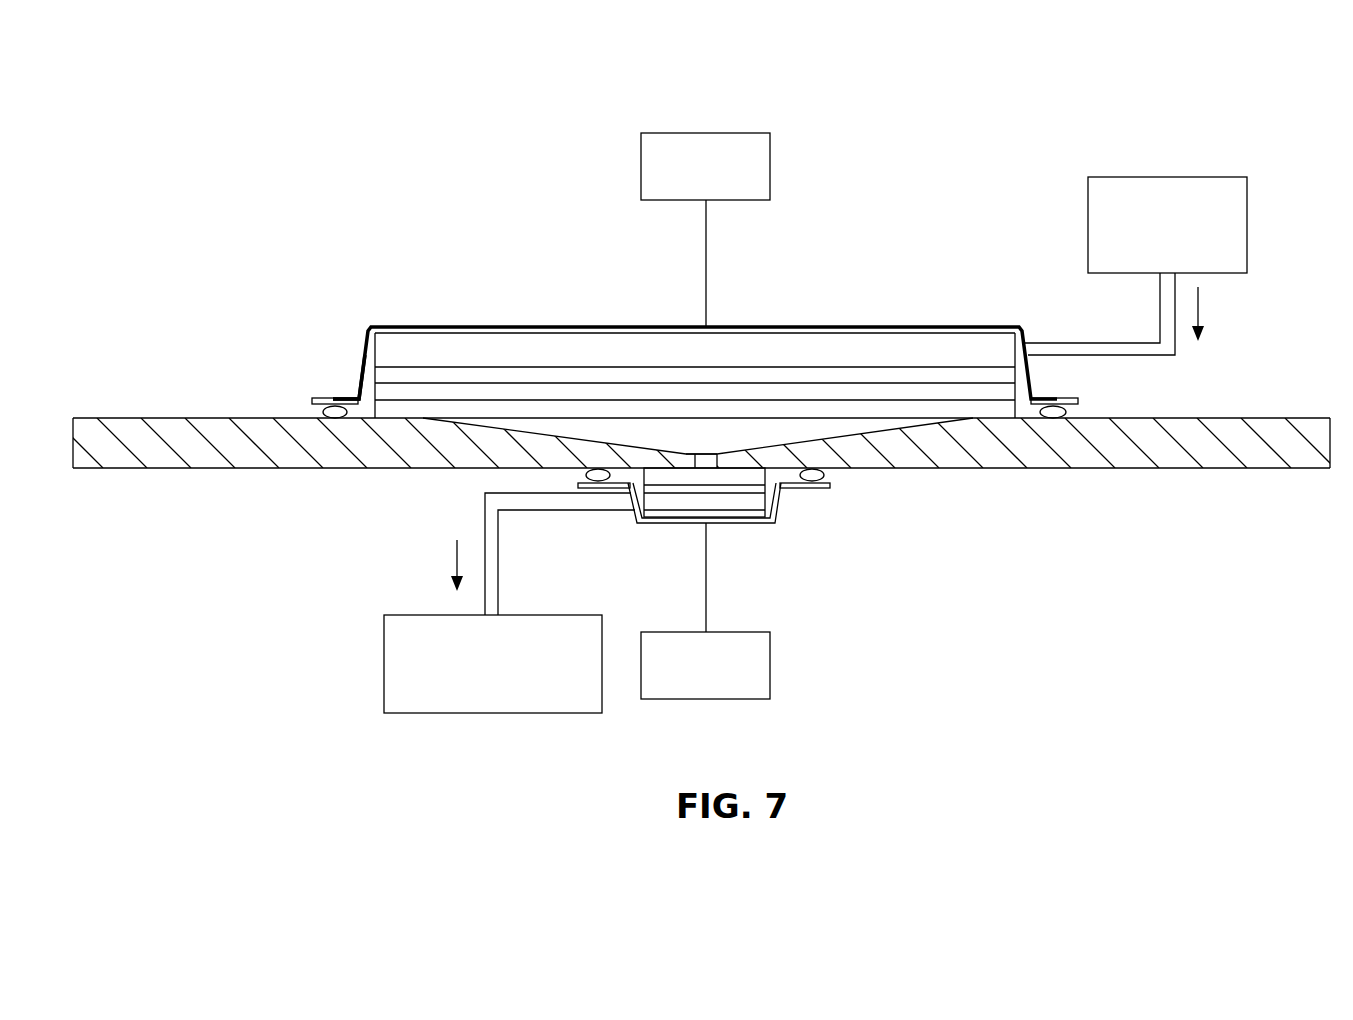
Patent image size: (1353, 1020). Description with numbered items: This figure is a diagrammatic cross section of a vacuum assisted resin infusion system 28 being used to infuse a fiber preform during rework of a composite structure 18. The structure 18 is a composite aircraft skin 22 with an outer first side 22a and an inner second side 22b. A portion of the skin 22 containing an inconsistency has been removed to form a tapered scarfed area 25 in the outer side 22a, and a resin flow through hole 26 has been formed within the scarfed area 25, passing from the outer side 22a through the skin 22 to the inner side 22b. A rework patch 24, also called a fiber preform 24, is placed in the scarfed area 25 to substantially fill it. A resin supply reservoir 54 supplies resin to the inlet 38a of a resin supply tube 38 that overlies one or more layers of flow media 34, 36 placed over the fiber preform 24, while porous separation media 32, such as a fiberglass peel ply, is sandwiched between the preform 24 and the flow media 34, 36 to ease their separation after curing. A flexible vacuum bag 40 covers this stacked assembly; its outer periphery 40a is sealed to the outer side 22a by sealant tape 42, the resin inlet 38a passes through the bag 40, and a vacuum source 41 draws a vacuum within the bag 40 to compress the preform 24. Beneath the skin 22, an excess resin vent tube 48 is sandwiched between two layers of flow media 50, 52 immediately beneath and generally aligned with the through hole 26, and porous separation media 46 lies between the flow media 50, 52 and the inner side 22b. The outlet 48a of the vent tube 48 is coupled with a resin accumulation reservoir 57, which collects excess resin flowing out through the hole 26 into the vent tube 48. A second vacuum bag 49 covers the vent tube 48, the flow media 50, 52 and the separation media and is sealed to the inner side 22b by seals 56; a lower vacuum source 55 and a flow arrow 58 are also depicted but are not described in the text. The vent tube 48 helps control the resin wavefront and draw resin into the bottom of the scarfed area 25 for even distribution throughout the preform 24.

The composite structure 18 is at (1276, 390).
The composite aircraft skin 22 is at (160, 453).
The outer first side 22a is at (243, 405).
The inner second side 22b is at (1082, 469).
The rework patch 24 is at (790, 430).
The scarfed area 25 is at (528, 431).
The resin flow through hole 26 is at (706, 462).
The vacuum assisted resin infusion system 28 is at (984, 242).
The porous separation media 32 is at (637, 413).
The flow media 34 is at (565, 395).
The flow media 36 is at (483, 377).
The resin supply tube 38 is at (923, 353).
The resin inlet 38a is at (1082, 348).
The flexible vacuum bag 40 is at (422, 327).
The outer periphery of vacuum bag 40a is at (335, 406).
The vacuum source 41 is at (770, 160).
The sealant tape 42 is at (333, 400).
The porous separation media 46 is at (781, 486).
The excess resin vent tube 48 is at (735, 498).
The outlet of vent tube 48a is at (580, 500).
The vacuum bag 49 is at (722, 528).
The flow media 50 is at (655, 492).
The flow media 52 is at (680, 513).
The resin supply reservoir 54 is at (1247, 222).
The vacuum source 55 is at (770, 663).
The seals 56 is at (752, 476).
The resin accumulation reservoir 57 is at (384, 663).
The resin flow direction 58 is at (453, 555).